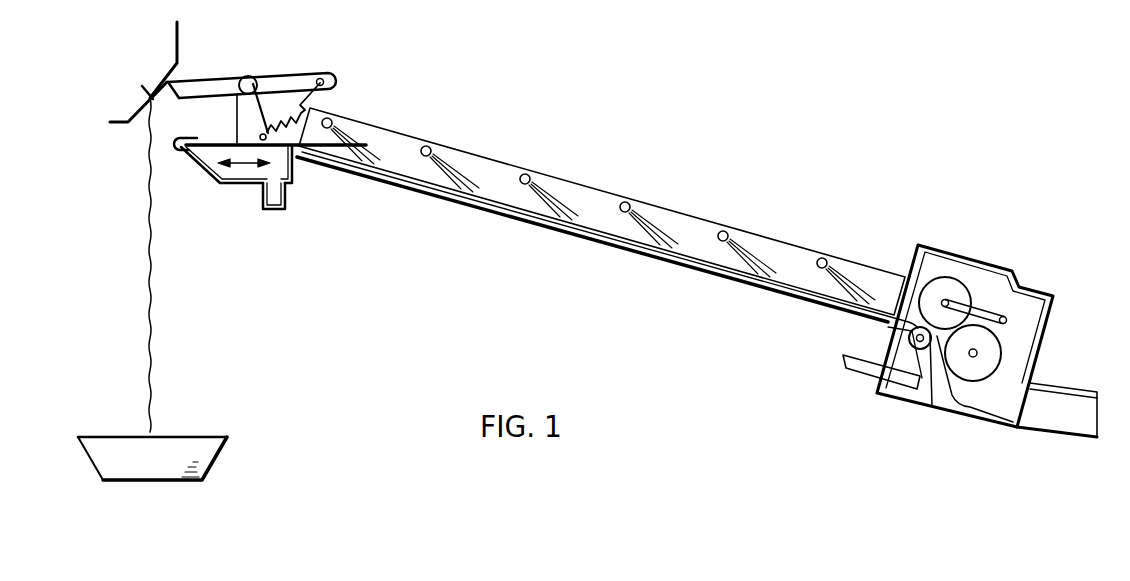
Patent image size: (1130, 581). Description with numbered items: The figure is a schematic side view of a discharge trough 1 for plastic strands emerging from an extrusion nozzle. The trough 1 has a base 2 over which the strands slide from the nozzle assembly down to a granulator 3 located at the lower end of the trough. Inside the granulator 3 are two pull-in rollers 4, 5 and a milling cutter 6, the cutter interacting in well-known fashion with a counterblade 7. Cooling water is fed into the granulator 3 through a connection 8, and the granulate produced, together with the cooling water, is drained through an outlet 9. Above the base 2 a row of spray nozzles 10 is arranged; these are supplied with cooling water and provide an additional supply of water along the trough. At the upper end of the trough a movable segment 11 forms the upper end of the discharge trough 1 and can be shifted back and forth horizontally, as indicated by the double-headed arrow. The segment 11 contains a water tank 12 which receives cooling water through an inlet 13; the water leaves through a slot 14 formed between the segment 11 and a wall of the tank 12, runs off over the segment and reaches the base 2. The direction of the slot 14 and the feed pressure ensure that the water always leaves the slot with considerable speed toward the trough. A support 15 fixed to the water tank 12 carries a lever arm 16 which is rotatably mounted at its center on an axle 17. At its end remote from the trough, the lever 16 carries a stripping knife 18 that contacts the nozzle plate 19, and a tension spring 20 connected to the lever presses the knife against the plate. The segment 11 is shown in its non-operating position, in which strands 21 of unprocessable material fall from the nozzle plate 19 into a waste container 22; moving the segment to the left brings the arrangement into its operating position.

The discharge trough 1 is at (597, 198).
The base 2 is at (688, 252).
The granulator 3 is at (1025, 307).
The pull-in roller 4 is at (952, 282).
The pull-in roller 5 is at (908, 338).
The milling cutter 6 is at (992, 351).
The counterblade 7 is at (933, 405).
The connection 8 is at (865, 367).
The outlet 9 is at (1072, 413).
The spray nozzles 10 is at (525, 174).
The movable segment 11 is at (217, 142).
The water tank 12 is at (243, 173).
The inlet 13 is at (287, 203).
The slot 14 is at (198, 149).
The support 15 is at (241, 120).
The lever arm 16 is at (300, 80).
The axle 17 is at (255, 80).
The stripping knife 18 is at (186, 82).
The nozzle plate 19 is at (165, 82).
The tension spring 20 is at (303, 100).
The strands 21 is at (150, 352).
The waste container 22 is at (192, 448).